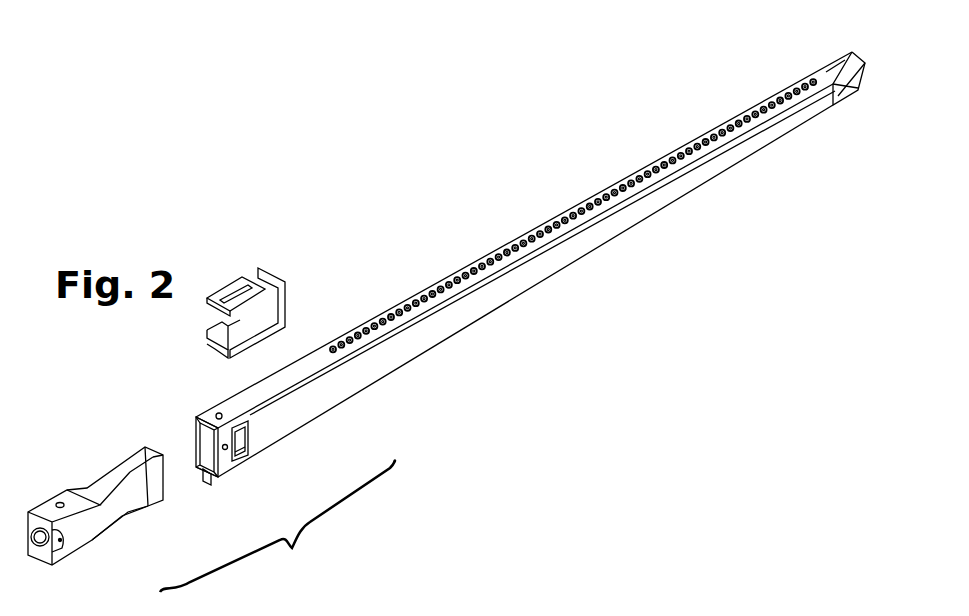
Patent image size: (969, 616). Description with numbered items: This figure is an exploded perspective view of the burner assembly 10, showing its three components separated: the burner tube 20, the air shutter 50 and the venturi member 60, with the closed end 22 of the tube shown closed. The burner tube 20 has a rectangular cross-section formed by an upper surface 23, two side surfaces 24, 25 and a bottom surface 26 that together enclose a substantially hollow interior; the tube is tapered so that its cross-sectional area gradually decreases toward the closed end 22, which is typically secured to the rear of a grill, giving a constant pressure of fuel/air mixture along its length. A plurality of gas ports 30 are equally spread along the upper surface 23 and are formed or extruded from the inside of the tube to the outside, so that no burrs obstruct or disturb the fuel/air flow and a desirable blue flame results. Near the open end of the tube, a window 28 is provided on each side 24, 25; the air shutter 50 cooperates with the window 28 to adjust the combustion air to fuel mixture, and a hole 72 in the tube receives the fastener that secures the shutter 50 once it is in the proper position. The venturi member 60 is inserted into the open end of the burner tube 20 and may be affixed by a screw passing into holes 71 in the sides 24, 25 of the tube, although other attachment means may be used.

The burner assembly 10 is at (487, 220).
The burner tube 20 is at (676, 187).
The closed end 22 is at (861, 72).
The upper surface 23 is at (313, 360).
The side surface 24 is at (213, 471).
The side surface 25 is at (196, 437).
The bottom surface 26 is at (198, 463).
The window 28 is at (248, 428).
The gas ports 30 is at (810, 77).
The air shutter 50 is at (218, 278).
The venturi member 60 is at (52, 482).
The holes 71 is at (226, 450).
The hole 72 is at (217, 413).